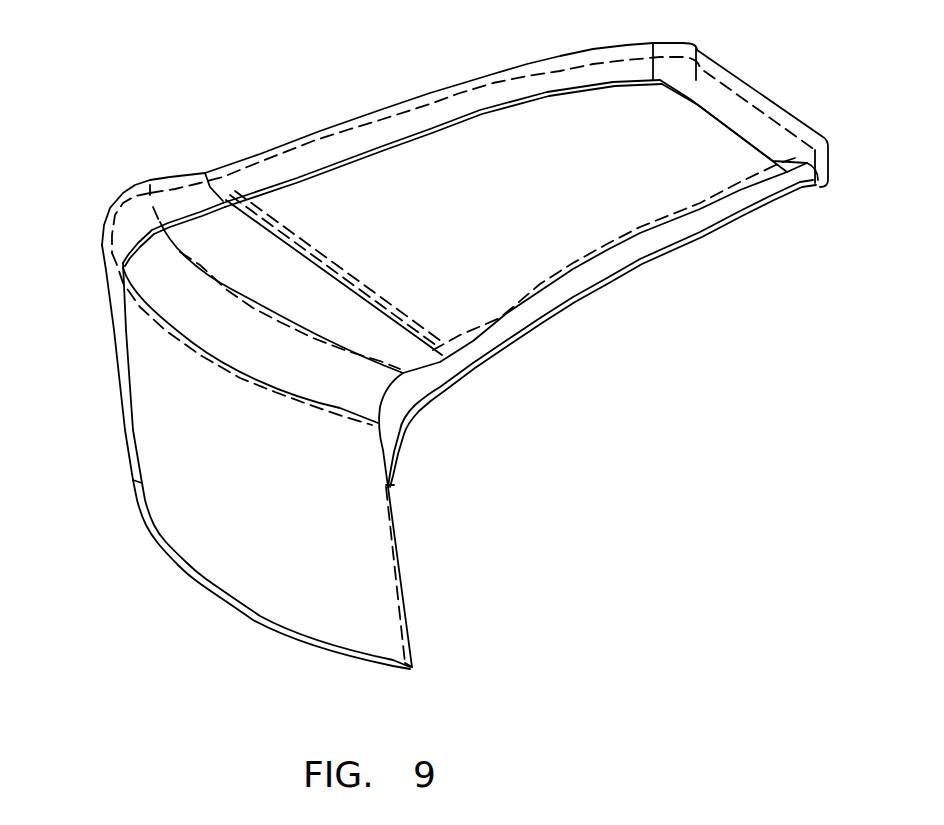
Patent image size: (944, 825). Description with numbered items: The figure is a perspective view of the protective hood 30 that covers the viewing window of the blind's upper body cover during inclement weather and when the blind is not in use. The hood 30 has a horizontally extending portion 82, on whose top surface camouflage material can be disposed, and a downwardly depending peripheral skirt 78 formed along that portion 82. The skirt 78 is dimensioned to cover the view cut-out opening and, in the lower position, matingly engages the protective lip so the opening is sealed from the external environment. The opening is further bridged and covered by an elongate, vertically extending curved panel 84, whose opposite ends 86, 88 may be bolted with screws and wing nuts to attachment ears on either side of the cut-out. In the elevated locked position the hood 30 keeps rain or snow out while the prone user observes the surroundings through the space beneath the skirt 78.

The hood 30 is at (242, 108).
The peripheral skirt 78 is at (360, 137).
The horizontally extending portion 82 is at (497, 287).
The curved panel 84 is at (208, 540).
The end of curved panel 86 is at (120, 400).
The end of curved panel 88 is at (403, 575).